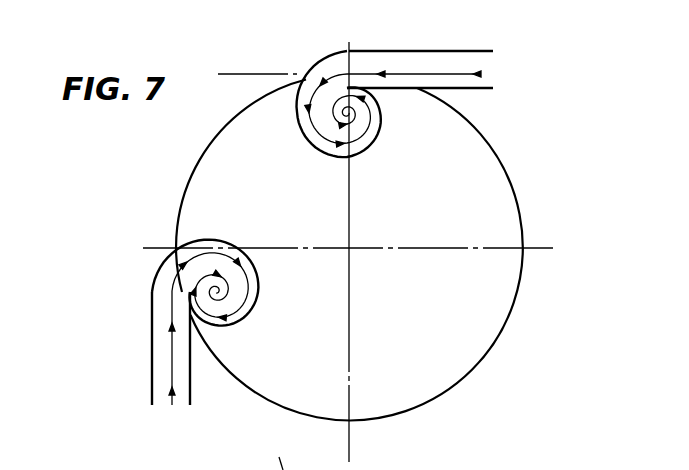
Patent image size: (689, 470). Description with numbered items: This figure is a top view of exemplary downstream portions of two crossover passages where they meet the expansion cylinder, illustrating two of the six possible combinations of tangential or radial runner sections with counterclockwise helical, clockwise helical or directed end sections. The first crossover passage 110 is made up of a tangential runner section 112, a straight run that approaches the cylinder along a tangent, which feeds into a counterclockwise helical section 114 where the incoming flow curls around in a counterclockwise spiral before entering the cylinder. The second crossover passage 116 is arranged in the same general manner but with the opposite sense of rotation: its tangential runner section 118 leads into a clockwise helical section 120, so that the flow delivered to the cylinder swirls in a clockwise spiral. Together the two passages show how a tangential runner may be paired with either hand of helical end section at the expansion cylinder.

The crossover passage 110 is at (307, 61).
The tangential runner section 112 is at (422, 50).
The counterclockwise helical section 114 is at (296, 114).
The crossover passage 116 is at (150, 277).
The tangential runner section 118 is at (152, 335).
The clockwise helical section 120 is at (204, 240).